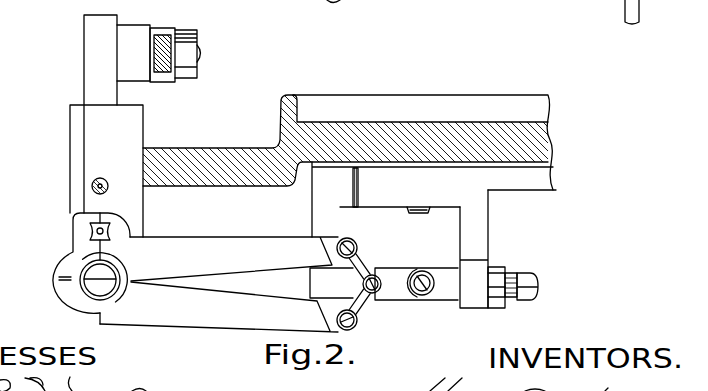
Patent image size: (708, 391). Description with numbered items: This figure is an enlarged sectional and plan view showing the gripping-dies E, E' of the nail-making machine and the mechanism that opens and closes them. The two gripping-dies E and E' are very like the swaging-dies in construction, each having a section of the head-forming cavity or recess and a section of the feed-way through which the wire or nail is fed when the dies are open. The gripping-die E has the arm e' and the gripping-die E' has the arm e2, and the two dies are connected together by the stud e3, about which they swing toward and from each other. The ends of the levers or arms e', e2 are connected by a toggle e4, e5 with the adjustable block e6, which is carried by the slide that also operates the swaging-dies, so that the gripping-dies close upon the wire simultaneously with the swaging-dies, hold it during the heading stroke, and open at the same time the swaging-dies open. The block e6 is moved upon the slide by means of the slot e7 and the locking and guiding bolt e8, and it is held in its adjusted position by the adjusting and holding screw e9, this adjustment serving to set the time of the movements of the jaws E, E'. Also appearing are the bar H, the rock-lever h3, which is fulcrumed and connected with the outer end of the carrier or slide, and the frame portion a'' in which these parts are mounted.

The standard bar H is at (92, 72).
The rock-lever h3 is at (163, 33).
The gripping-die E is at (71, 233).
The gripping-die E' is at (94, 263).
The stud e3 is at (97, 285).
The arm e2 is at (234, 259).
The arm e' is at (219, 307).
The toggle e4 is at (358, 258).
The toggle e5 is at (358, 312).
The adjustable block e6 is at (384, 281).
The slot e7 is at (432, 273).
The locking and guiding bolt e8 is at (422, 296).
The adjusting and holding screw e9 is at (512, 275).
The frame portion a'' is at (345, 166).